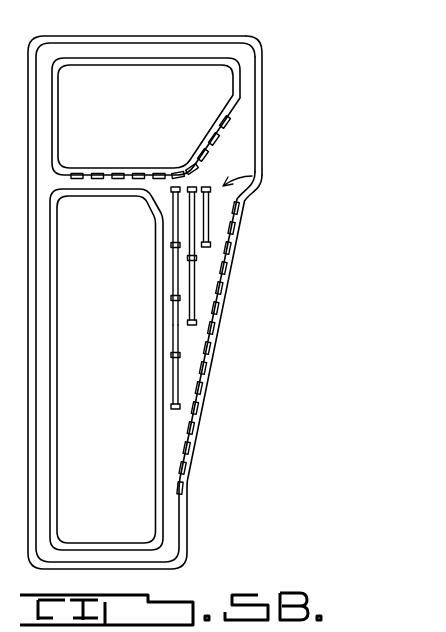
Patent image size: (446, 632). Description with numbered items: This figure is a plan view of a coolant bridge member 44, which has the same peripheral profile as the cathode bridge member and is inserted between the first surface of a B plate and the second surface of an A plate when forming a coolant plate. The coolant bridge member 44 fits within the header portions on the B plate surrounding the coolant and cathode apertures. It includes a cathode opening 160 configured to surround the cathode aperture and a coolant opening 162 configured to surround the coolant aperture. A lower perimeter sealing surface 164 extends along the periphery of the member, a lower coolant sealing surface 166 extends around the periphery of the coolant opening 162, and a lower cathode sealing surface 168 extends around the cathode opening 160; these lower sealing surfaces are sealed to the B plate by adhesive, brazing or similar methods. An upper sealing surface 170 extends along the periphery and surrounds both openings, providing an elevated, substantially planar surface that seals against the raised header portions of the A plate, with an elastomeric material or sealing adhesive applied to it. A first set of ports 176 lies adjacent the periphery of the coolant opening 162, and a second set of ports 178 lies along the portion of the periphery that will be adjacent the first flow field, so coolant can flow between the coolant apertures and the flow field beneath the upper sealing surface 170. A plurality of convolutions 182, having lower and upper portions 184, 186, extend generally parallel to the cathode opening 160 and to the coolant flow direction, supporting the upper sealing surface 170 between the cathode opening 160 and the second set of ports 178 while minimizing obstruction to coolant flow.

The coolant bridge member 44 is at (333, 69).
The cathode opening 160 is at (131, 512).
The coolant opening 162 is at (209, 97).
The lower perimeter sealing surface 164 is at (257, 163).
The lower coolant sealing surface 166 is at (54, 92).
The lower cathode sealing surface 168 is at (57, 273).
The upper sealing surface 170 is at (236, 146).
The first set of ports 176 is at (137, 173).
The second set of ports 178 is at (217, 323).
The convolutions 182 is at (257, 181).
The lower portion 184 is at (177, 322).
The upper portion 186 is at (177, 383).